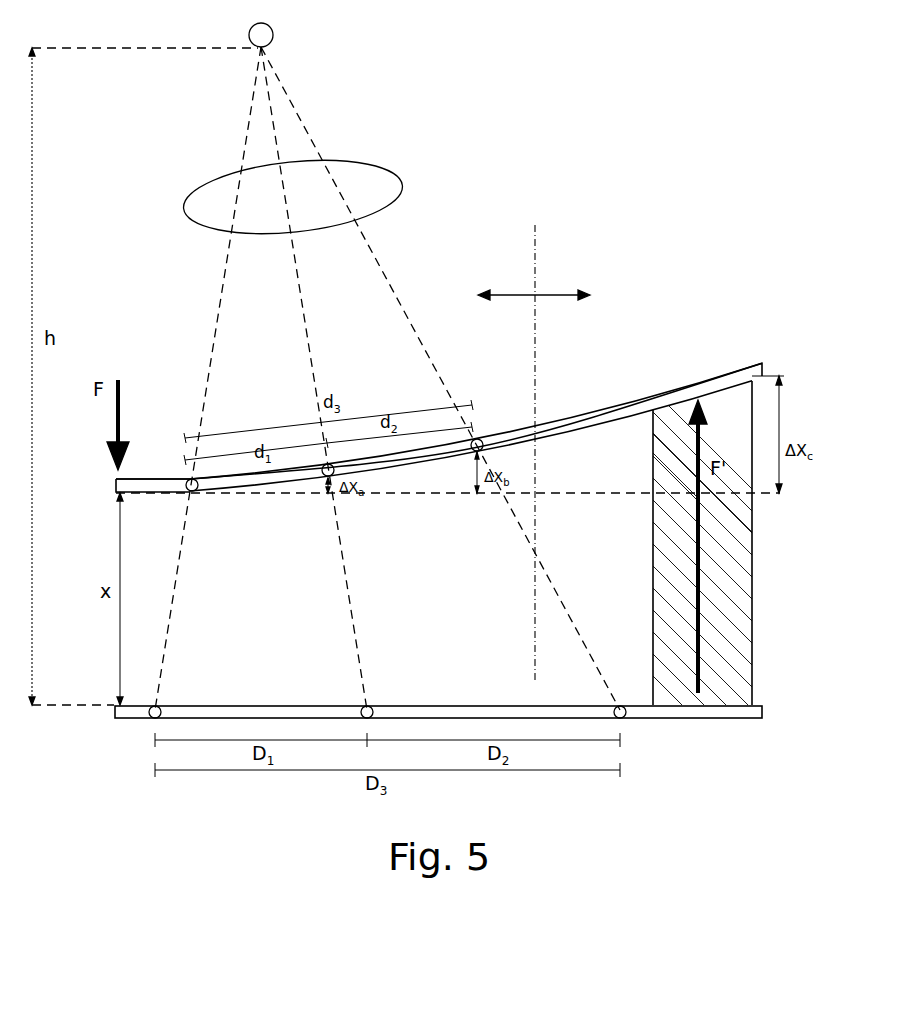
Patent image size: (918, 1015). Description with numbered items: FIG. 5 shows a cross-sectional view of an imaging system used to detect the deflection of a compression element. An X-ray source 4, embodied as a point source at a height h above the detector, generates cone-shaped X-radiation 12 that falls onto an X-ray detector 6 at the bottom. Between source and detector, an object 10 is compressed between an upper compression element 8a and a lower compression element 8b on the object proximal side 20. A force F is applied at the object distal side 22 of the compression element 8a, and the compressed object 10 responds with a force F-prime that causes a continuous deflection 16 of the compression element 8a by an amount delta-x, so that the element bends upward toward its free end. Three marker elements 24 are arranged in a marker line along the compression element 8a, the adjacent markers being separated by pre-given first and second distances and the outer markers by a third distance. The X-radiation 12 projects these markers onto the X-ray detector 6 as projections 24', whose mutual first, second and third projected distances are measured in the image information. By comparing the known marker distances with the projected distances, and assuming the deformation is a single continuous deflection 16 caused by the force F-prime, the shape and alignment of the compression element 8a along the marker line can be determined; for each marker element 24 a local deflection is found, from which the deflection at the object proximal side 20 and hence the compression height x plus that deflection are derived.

The X-ray source 4 is at (273, 36).
The X-radiation 12 is at (403, 188).
The object distal side 22 is at (506, 284).
The object proximal side 20 is at (562, 284).
The deflection 16 is at (596, 412).
The compression element 8a is at (115, 492).
The marker element 24 is at (326, 423).
The object 10 is at (735, 545).
The X-ray detector 6 is at (417, 752).
The compression element 8b is at (115, 713).
The projections of marker elements 24' is at (385, 670).